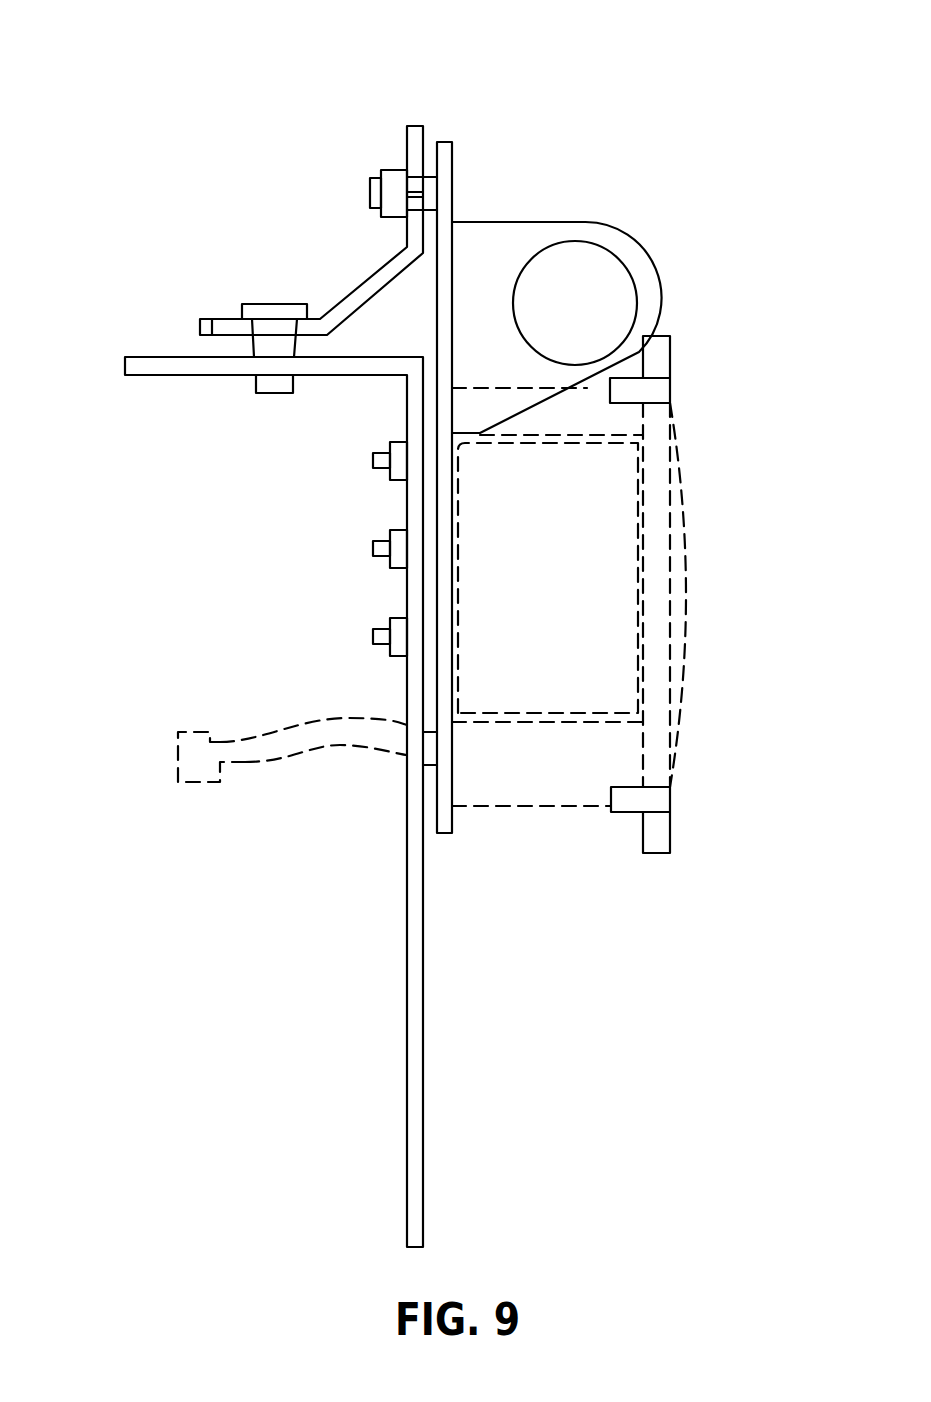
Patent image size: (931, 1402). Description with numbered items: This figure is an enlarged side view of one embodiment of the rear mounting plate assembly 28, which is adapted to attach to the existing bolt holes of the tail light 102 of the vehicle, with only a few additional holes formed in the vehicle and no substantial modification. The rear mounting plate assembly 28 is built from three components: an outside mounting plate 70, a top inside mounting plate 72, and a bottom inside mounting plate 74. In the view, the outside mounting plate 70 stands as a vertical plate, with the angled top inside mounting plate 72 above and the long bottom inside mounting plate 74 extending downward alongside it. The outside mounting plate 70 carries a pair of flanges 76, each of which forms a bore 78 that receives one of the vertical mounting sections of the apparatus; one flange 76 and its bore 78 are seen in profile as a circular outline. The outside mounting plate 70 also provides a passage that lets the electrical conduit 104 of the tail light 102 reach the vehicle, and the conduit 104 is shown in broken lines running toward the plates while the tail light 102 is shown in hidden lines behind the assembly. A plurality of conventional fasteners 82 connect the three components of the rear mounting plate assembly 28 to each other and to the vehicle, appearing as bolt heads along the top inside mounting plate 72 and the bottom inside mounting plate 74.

The rear mounting plate assembly 28 is at (520, 92).
The outside mounting plate 70 is at (452, 167).
The top inside mounting plate 72 is at (362, 270).
The bottom inside mounting plate 74 is at (407, 1027).
The flange 76 is at (545, 237).
The bore 78 is at (572, 303).
The fastener 82 is at (383, 170).
The tail light 102 is at (685, 593).
The electrical conduit 104 is at (178, 760).